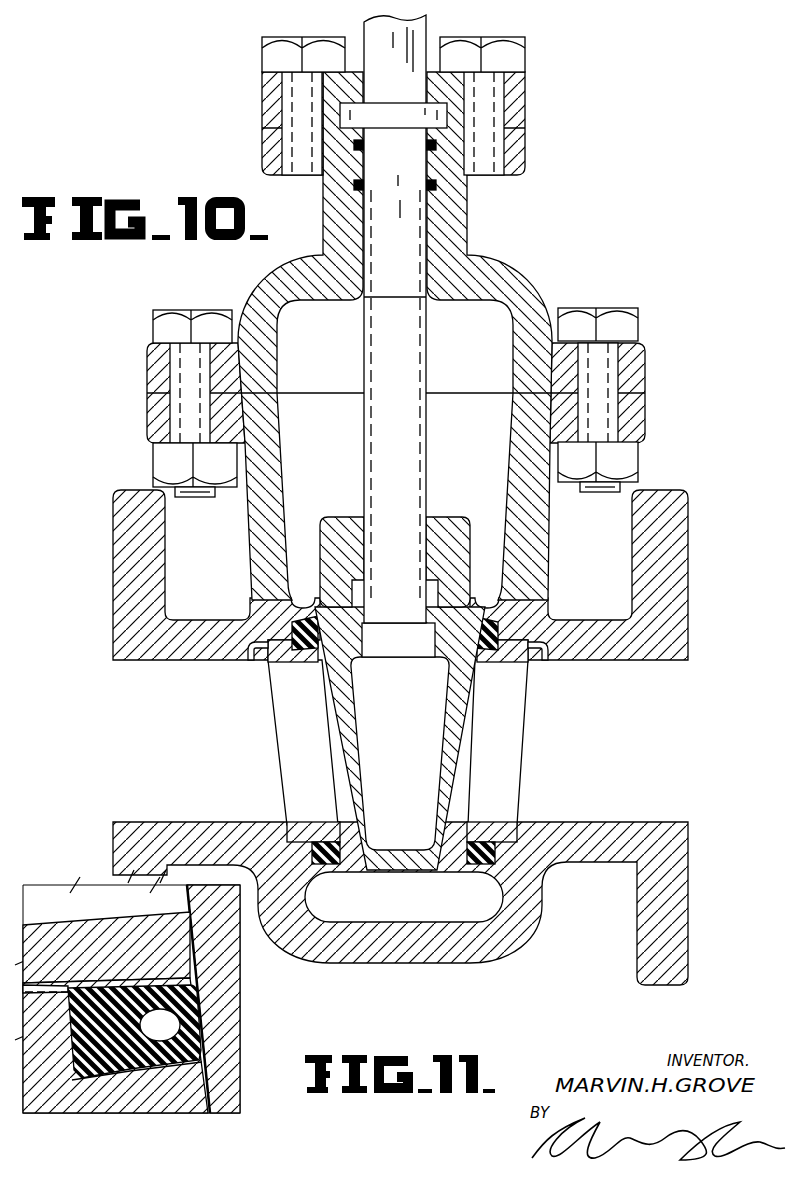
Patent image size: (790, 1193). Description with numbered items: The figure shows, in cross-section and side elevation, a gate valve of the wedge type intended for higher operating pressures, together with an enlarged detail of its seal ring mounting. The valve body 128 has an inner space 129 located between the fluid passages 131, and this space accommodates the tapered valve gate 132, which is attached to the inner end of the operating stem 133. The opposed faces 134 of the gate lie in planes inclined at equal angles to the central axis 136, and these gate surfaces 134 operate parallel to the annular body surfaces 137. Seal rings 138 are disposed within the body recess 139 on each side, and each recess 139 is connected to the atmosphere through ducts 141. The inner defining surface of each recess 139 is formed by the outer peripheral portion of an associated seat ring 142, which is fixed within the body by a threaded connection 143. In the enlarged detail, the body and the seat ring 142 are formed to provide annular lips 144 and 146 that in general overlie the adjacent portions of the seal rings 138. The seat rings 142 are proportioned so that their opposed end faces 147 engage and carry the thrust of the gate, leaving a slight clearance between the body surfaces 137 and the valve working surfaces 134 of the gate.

In FIG. 10, the valve body 128 is at (524, 935).
In FIG. 10, the inner space 129 is at (428, 958).
In FIG. 10, the fluid passages 131 is at (205, 748).
In FIG. 10, the tapered valve gate 132 is at (357, 766).
In FIG. 10, the operating stem 133 is at (420, 414).
In FIG. 10, the opposed faces of the gate 134 is at (327, 712).
In FIG. 10, the central axis 136 is at (398, 468).
In FIG. 10, the annular body surfaces 137 is at (293, 602).
In FIG. 10, the seal rings 138 is at (293, 659).
In FIG. 11, the seal rings 138 is at (108, 1076).
In FIG. 10, the body recess 139 is at (319, 866).
In FIG. 11, the body recess 139 is at (148, 1100).
In FIG. 10, the ducts 141 is at (289, 633).
In FIG. 10, the seat ring 142 is at (290, 823).
In FIG. 11, the seat ring 142 is at (25, 927).
In FIG. 10, the threaded connection 143 is at (250, 656).
In FIG. 11, the threaded connection 143 is at (52, 978).
In FIG. 11, the annular lip 144 is at (196, 968).
In FIG. 11, the annular lip 146 is at (197, 1055).
In FIG. 11, the opposed end faces 147 is at (200, 1078).